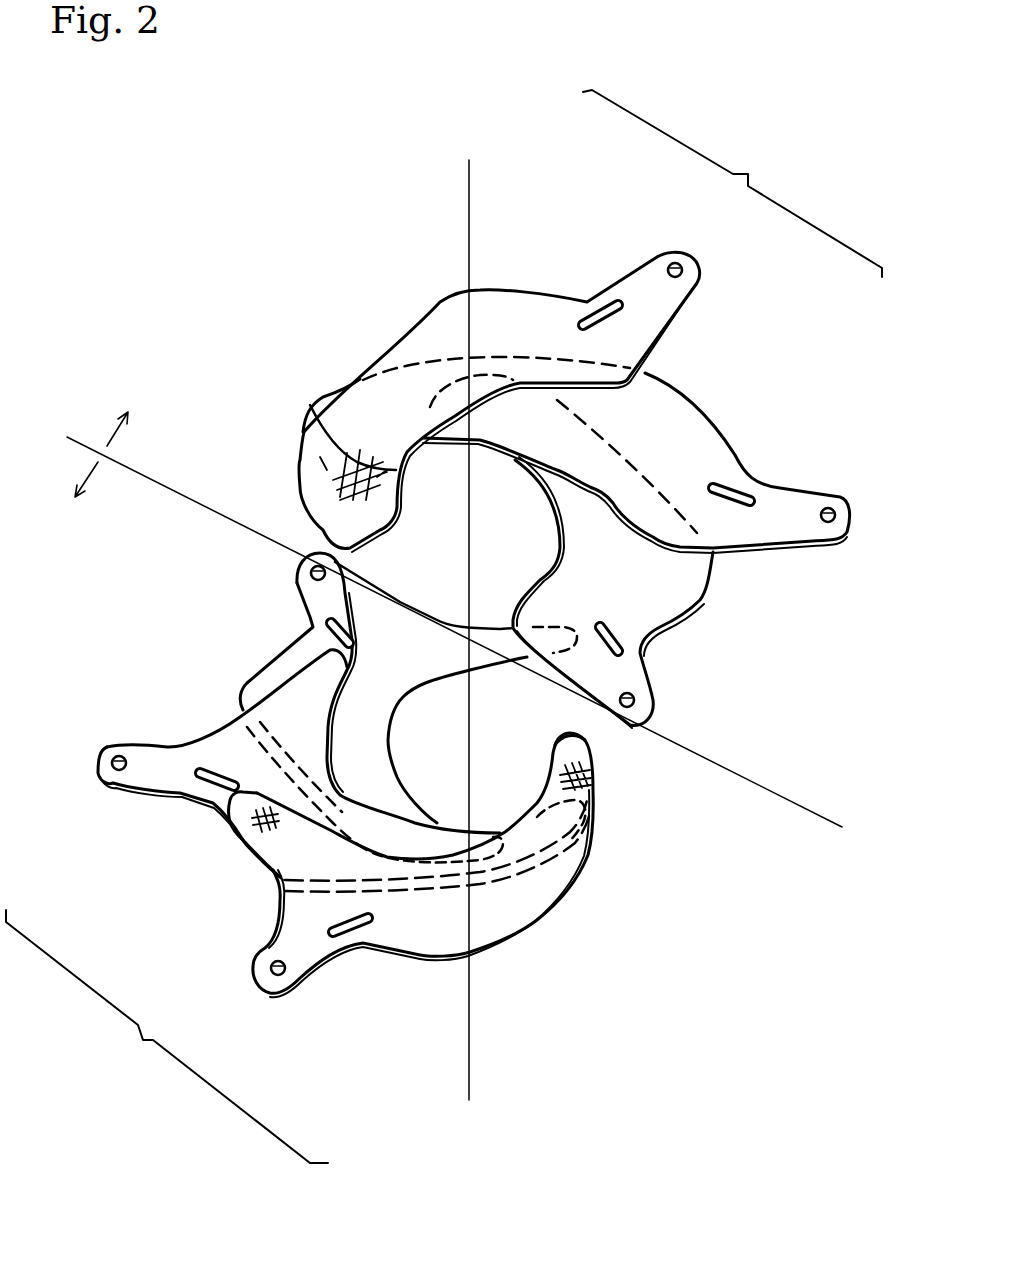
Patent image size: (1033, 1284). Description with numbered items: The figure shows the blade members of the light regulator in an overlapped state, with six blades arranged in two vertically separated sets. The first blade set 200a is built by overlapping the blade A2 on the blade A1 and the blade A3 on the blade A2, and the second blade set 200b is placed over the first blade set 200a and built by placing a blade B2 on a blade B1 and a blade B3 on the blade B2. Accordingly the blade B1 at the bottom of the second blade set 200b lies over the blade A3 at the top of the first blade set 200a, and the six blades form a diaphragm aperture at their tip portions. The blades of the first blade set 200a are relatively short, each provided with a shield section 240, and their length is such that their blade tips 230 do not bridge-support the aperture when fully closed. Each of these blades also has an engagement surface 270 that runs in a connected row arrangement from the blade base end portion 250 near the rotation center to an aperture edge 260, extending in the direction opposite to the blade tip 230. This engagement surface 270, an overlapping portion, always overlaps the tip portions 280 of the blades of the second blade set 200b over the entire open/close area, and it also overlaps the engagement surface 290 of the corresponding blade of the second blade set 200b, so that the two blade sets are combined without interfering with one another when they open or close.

The first blade set 200a is at (167, 1036).
The second blade set 200b is at (732, 183).
The blade A1 is at (271, 663).
The blade A2 is at (190, 800).
The blade A3 is at (392, 950).
The blade B1 is at (680, 623).
The blade B2 is at (737, 430).
The blade B3 is at (527, 290).
The blade tip 230 is at (577, 743).
The shield section 240 is at (595, 768).
The blade base end portion 250 is at (297, 958).
The aperture edge 260 is at (510, 826).
The engagement surface 270 is at (262, 826).
The tip portion 280 is at (300, 530).
The engagement surface 290 is at (323, 400).